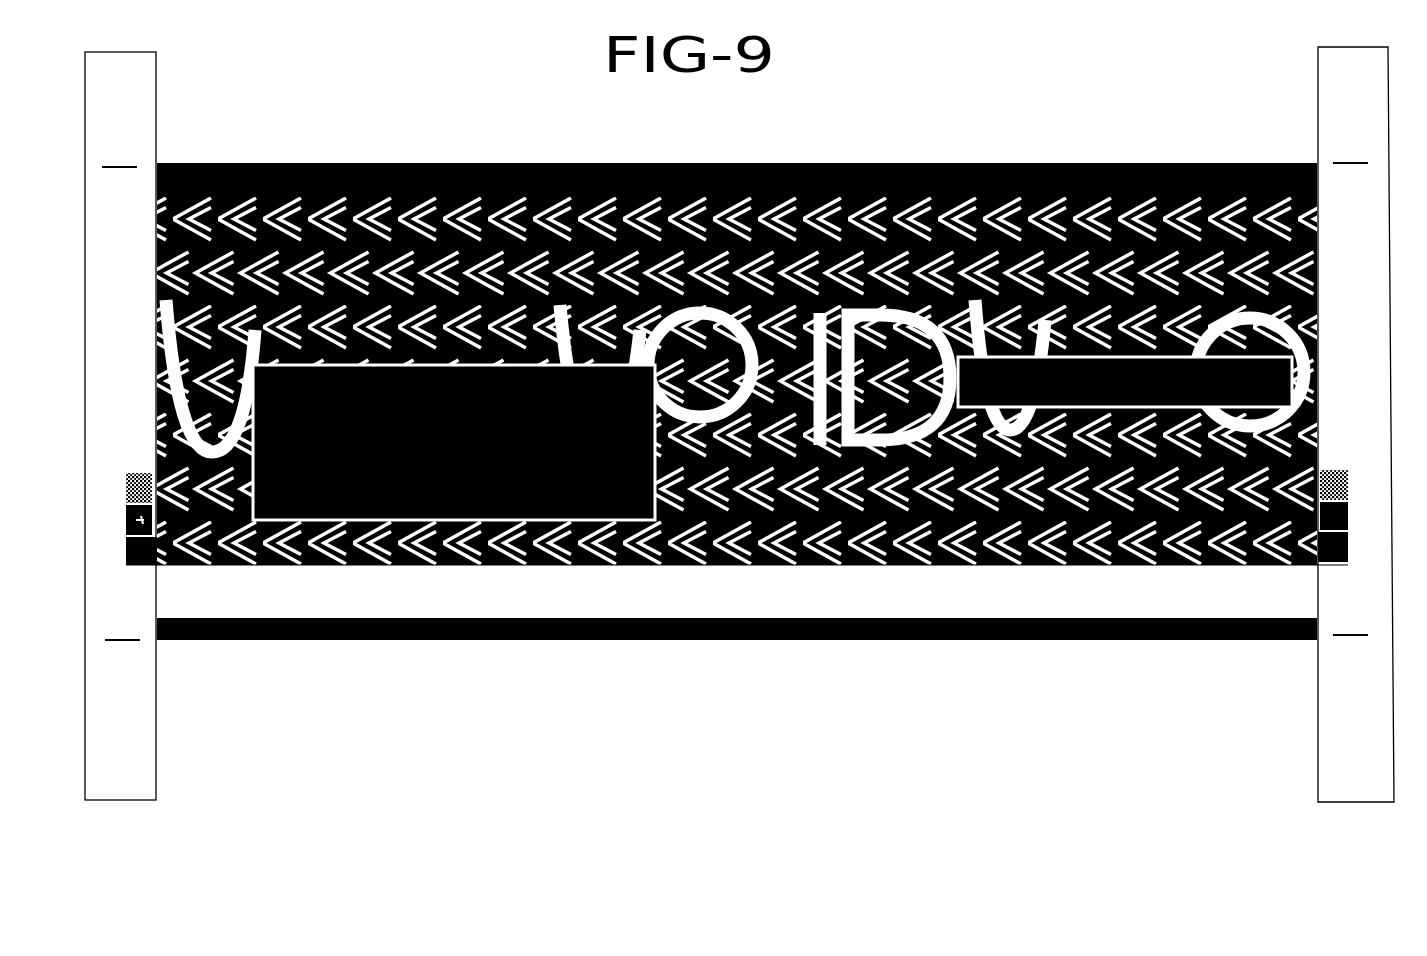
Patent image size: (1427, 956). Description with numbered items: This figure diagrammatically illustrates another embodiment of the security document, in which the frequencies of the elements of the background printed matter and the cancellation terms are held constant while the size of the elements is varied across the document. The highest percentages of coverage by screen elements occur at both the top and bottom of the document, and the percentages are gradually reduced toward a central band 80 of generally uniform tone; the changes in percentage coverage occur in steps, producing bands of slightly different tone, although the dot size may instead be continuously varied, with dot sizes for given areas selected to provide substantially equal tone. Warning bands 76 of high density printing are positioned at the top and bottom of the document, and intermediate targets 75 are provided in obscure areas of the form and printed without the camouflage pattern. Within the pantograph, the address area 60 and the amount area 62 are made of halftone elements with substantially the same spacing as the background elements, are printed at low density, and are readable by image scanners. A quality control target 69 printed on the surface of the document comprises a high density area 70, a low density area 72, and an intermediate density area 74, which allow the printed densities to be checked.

The address area 60 is at (350, 462).
The amount area 62 is at (1012, 392).
The quality control target 69 is at (128, 566).
The high density area 70 is at (128, 554).
The low density area 72 is at (140, 490).
The intermediate density area 74 is at (135, 521).
The intermediate target 75 is at (453, 176).
The warning band 76 is at (222, 164).
The central band 80 is at (1325, 278).